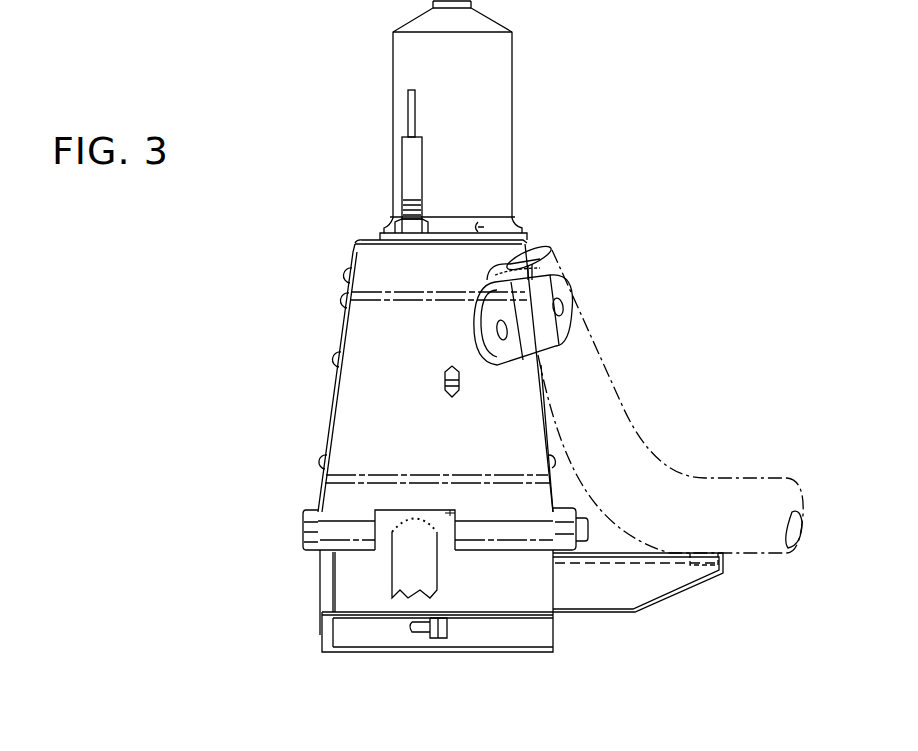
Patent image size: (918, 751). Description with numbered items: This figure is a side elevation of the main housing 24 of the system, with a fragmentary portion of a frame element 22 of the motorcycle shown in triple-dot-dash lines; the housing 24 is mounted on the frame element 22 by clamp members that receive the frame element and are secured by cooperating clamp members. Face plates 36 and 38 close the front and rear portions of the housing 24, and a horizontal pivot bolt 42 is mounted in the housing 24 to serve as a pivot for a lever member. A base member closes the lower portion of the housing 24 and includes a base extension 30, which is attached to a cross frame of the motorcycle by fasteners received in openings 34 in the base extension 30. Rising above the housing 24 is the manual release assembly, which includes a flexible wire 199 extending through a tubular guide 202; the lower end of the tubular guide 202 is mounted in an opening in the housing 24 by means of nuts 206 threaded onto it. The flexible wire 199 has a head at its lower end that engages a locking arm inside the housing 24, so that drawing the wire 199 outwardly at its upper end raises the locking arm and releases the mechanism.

The flexible wire 199 is at (412, 108).
The tubular guide 202 is at (412, 165).
The nuts 206 is at (420, 222).
The housing 24 is at (366, 262).
The face plate 36 is at (332, 429).
The horizontal pivot bolt 42 is at (306, 532).
The face plate 38 is at (558, 496).
The frame element 22 is at (620, 403).
The openings 34 is at (715, 573).
The base extension 30 is at (600, 612).